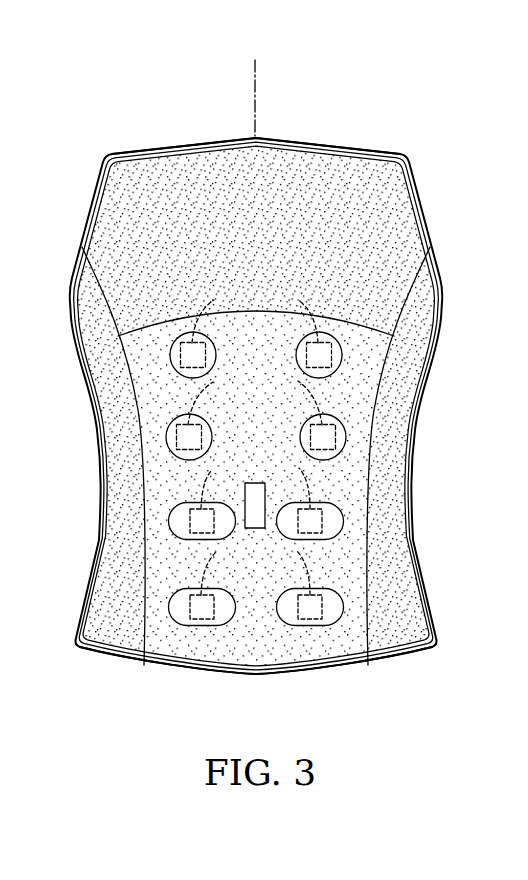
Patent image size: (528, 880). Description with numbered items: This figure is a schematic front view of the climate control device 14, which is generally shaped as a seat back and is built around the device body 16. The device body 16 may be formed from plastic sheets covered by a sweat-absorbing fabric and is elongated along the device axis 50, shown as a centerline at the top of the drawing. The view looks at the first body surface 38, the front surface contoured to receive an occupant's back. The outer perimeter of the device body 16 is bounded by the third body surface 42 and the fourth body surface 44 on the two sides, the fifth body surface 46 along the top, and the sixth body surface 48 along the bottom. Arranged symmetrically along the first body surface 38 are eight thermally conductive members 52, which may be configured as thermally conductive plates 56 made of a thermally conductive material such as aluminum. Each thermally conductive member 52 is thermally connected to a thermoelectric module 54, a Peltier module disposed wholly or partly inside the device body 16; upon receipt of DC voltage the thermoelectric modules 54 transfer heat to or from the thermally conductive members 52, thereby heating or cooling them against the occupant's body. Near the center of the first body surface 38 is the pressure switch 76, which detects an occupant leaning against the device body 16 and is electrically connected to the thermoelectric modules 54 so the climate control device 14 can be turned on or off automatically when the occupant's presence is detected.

The climate control device 14 is at (430, 208).
The device body 16 is at (432, 238).
The first body surface 38 is at (133, 367).
The third body surface 42 is at (80, 357).
The fourth body surface 44 is at (427, 364).
The fifth body surface 46 is at (322, 140).
The sixth body surface 48 is at (360, 666).
The device axis 50 is at (253, 72).
The thermally conductive members 52 is at (191, 378).
The thermoelectric modules 54 is at (255, 443).
The thermally conductive plates 56 is at (186, 337).
The pressure switch 76 is at (254, 504).